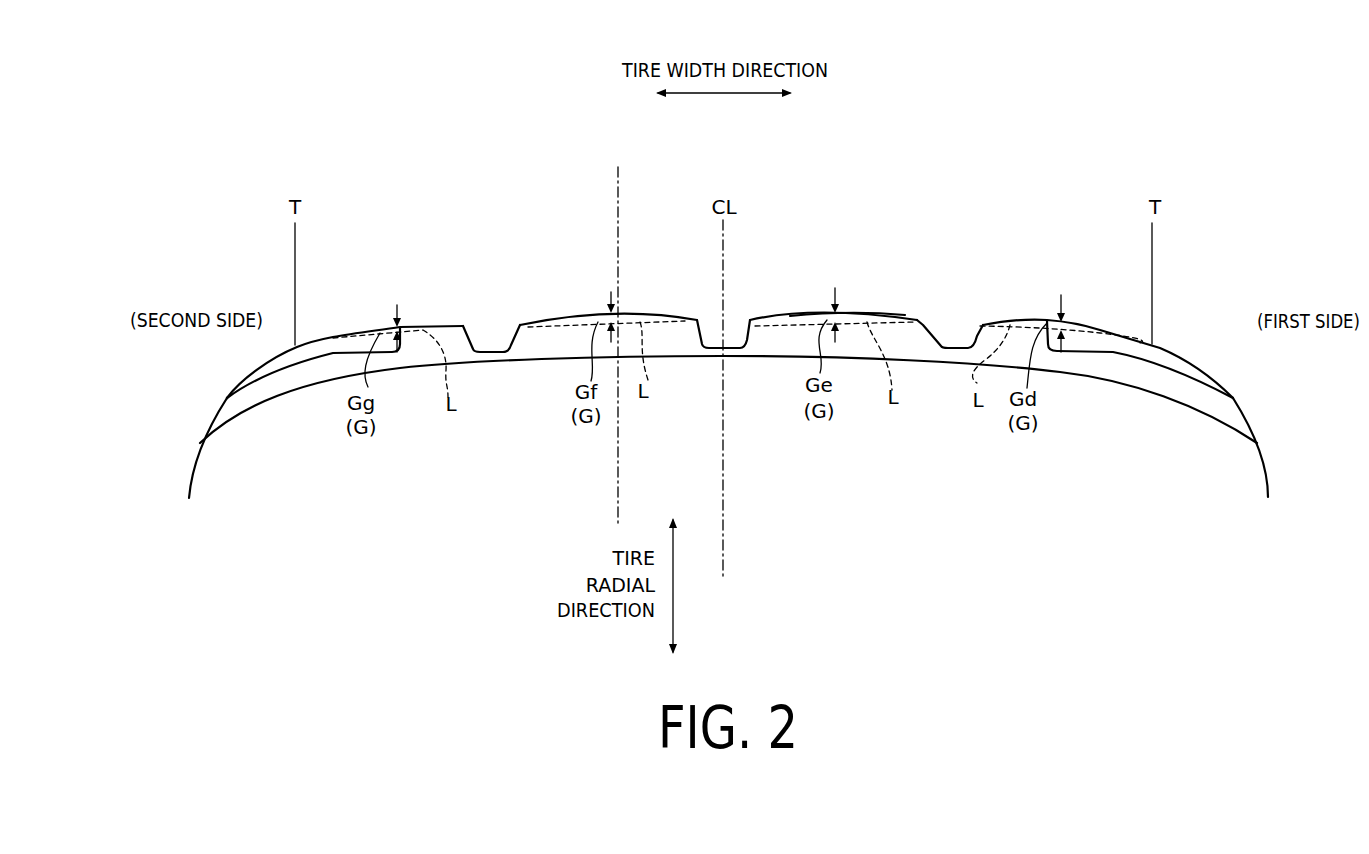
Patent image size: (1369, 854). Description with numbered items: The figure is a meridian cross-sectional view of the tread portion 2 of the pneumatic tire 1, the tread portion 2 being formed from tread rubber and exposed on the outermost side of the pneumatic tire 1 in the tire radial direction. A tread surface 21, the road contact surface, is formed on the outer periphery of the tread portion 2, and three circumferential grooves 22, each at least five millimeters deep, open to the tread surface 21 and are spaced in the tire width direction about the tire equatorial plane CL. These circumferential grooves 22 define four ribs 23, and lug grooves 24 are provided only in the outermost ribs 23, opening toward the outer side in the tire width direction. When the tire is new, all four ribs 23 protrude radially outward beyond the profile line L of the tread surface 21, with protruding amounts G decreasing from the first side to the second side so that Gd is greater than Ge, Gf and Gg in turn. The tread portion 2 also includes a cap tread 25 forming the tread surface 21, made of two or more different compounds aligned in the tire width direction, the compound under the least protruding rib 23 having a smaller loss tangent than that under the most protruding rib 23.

The pneumatic tire 1 is at (987, 177).
The tread portion 2 is at (790, 340).
The tread surface 21 is at (896, 310).
The circumferential groove 22 is at (474, 340).
The rib 23 is at (390, 328).
The lug groove 24 is at (330, 353).
The cap tread 25 is at (543, 347).